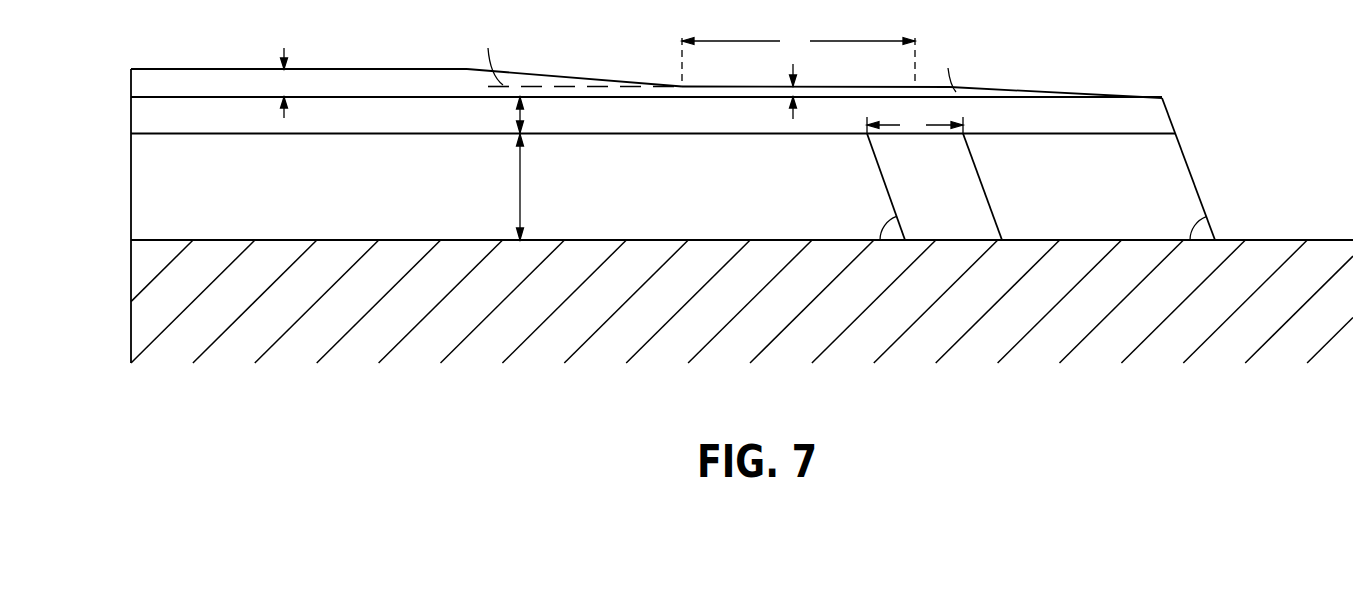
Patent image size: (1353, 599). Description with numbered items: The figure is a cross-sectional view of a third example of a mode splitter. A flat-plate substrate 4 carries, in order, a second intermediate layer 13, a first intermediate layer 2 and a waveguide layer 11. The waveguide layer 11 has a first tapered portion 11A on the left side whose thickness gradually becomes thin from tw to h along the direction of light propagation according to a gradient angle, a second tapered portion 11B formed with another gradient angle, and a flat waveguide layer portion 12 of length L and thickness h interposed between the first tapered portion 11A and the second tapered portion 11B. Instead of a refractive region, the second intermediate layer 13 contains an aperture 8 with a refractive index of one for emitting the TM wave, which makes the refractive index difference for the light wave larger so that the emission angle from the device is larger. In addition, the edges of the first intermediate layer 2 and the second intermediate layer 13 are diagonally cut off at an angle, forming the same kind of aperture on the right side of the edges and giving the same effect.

The flat-plate substrate 4 is at (145, 295).
The second intermediate layer 13 is at (152, 188).
The first intermediate layer 2 is at (153, 115).
The waveguide layer 11 is at (165, 83).
The first tapered portion 11A is at (592, 80).
The second tapered portion 11B is at (1052, 95).
The flat waveguide layer portion 12 is at (864, 89).
The aperture 8 is at (977, 186).